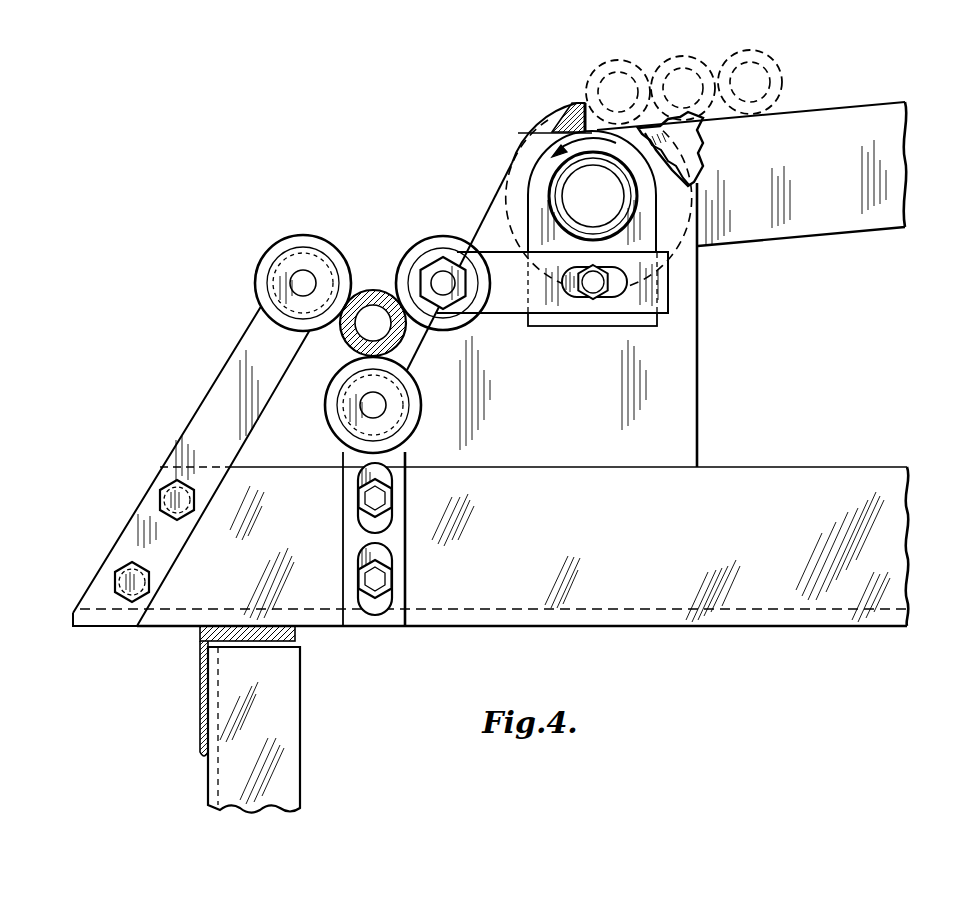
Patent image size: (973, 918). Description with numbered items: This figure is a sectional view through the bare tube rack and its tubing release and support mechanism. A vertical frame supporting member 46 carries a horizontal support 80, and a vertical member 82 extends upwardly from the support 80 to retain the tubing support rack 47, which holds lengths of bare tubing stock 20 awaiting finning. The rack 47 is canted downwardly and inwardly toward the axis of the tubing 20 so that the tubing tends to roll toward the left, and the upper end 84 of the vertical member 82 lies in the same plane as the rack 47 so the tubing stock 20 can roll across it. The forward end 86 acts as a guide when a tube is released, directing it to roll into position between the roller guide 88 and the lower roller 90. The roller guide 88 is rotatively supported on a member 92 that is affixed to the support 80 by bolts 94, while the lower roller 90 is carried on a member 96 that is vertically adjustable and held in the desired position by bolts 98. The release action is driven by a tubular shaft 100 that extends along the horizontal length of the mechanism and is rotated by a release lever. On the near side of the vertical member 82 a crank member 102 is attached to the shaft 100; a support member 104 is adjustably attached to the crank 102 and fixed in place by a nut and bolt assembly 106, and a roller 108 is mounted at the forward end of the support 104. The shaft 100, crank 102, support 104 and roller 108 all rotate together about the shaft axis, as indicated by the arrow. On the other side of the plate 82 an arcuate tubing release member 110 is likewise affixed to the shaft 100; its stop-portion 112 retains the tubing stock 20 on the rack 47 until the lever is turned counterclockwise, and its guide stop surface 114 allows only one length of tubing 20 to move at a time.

The bare tubing stock 20 is at (377, 291).
The vertical frame supporting member 46 is at (298, 752).
The tubing support rack 47 is at (848, 225).
The horizontal support 80 is at (900, 542).
The vertical member 82 is at (690, 424).
The upper end 84 is at (554, 128).
The forward end 86 is at (482, 218).
The roller guide 88 is at (294, 243).
The lower roller 90 is at (330, 414).
The member 92 is at (197, 423).
The bolts 94 is at (150, 580).
The member 96 is at (348, 487).
The bolts 98 is at (392, 572).
The tubular shaft 100 is at (558, 180).
The crank member 102 is at (538, 194).
The support member 104 is at (670, 298).
The nut and bolt assembly 106 is at (592, 300).
The roller 108 is at (437, 243).
The tubing release member 110 is at (537, 130).
The stop-portion 112 is at (593, 116).
The guide stop surface 114 is at (676, 156).